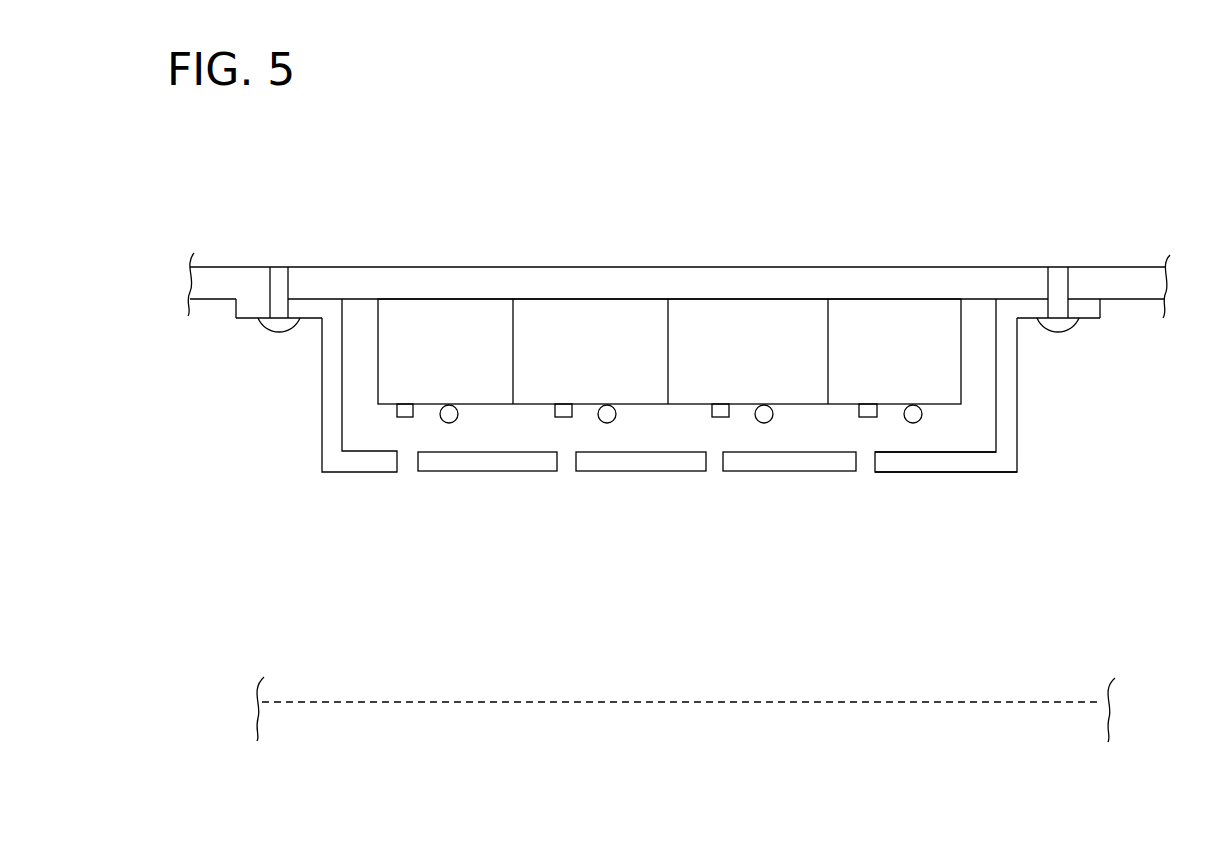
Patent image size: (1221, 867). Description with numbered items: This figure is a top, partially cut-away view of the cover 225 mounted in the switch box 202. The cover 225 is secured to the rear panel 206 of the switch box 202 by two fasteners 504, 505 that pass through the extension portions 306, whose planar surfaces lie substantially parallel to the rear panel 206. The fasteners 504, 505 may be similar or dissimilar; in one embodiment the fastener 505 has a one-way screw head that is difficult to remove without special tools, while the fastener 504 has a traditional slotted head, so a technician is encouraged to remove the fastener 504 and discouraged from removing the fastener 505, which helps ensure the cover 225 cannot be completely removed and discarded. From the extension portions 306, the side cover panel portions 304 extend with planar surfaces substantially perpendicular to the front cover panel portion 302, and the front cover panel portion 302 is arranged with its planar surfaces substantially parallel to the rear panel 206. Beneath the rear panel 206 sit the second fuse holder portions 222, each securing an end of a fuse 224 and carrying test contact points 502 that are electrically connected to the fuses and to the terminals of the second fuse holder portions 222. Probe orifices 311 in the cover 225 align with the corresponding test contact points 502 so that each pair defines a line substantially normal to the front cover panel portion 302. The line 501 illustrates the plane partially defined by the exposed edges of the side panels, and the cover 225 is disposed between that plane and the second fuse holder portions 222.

The switch box 202 is at (1104, 147).
The rear panel 206 is at (859, 285).
The second fuse holder portion 222 is at (461, 320).
The fuse 224 is at (449, 414).
The cover 225 is at (1025, 446).
The front cover panel portion 302 is at (944, 462).
The side cover panel portion 304 is at (328, 436).
The extension portion 306 is at (246, 310).
The probe orifice 311 is at (407, 462).
The line 501 is at (900, 703).
The test contact point 502 is at (402, 412).
The fastener 504 is at (278, 277).
The fastener 505 is at (1058, 278).